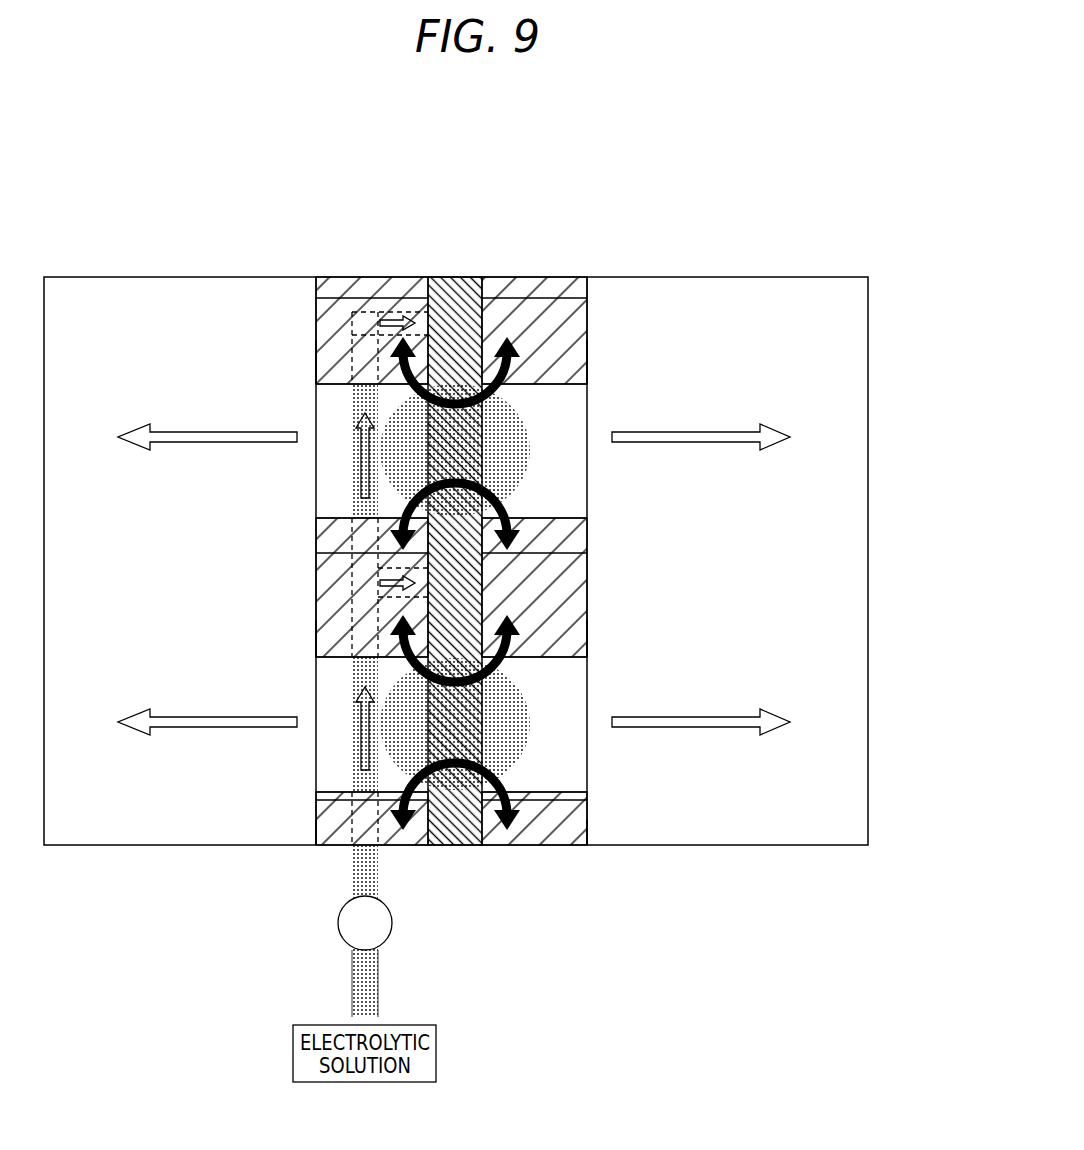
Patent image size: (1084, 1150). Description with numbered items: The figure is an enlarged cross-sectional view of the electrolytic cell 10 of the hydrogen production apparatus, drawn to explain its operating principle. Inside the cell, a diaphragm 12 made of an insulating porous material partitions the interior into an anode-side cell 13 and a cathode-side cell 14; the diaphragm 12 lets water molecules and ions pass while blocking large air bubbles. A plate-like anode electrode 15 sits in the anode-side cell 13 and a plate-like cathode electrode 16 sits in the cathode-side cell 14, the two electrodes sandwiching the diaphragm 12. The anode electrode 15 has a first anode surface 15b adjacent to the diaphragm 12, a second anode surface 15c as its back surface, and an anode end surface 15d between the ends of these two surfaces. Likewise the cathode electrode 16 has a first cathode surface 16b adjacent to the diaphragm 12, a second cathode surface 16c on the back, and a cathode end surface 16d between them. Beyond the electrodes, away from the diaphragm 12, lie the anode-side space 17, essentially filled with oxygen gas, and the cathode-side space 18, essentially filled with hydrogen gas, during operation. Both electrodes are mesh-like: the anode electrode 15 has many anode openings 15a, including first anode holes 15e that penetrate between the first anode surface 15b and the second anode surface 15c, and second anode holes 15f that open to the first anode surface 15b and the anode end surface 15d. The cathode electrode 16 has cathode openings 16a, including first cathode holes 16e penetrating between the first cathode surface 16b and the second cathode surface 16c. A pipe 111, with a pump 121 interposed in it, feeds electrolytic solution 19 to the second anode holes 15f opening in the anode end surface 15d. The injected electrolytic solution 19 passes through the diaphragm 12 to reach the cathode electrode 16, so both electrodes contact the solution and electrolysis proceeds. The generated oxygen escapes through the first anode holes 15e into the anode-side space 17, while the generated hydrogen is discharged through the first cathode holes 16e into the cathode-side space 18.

The electrolytic cell 10 is at (883, 208).
The diaphragm 12 is at (478, 277).
The anode-side cell 13 is at (222, 277).
The cathode-side cell 14 is at (665, 277).
The anode electrode 15 is at (404, 277).
The anode openings 15a is at (320, 507).
The first anode surface 15b is at (317, 292).
The second anode surface 15c is at (317, 366).
The anode end surface 15d is at (335, 277).
The first anode holes 15e is at (330, 470).
The second anode holes 15f is at (317, 328).
The cathode electrode 16 is at (520, 277).
The cathode openings 16a is at (587, 405).
The first cathode surface 16b is at (587, 292).
The second cathode surface 16c is at (587, 368).
The cathode end surface 16d is at (572, 277).
The first cathode holes 16e is at (575, 483).
The anode-side space 17 is at (63, 290).
The cathode-side space 18 is at (797, 290).
The electrolytic solution 19 is at (362, 995).
The pipe 111 is at (352, 955).
The pump 121 is at (338, 922).